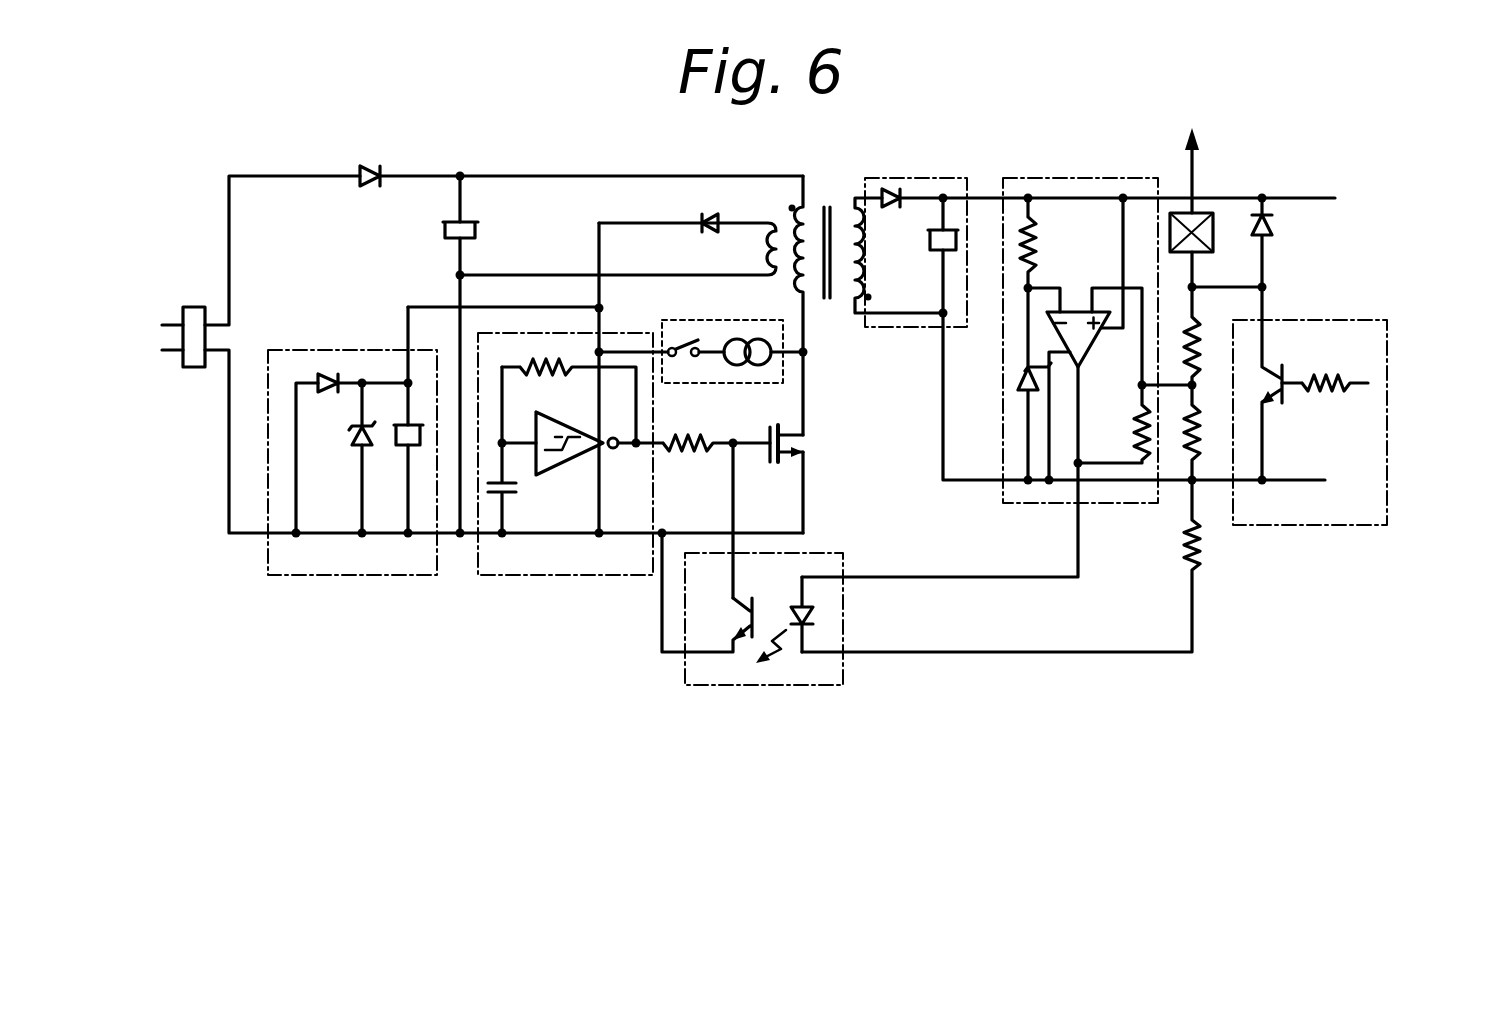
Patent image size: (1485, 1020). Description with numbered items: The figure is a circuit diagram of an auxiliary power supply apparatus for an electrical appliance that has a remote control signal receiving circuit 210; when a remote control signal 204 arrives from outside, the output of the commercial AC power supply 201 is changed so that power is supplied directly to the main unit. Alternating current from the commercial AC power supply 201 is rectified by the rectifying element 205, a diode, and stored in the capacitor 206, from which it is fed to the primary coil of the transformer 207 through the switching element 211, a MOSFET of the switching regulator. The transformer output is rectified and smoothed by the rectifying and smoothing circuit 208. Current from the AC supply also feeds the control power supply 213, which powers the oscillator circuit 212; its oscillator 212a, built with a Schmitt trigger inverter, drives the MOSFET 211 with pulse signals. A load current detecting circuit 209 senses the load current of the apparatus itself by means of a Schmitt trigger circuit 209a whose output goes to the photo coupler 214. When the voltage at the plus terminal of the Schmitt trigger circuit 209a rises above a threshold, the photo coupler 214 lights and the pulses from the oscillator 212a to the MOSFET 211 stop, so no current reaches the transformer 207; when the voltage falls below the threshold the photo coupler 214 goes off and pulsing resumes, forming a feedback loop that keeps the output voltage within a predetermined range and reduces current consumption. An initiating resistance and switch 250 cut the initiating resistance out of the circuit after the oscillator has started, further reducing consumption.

The commercial AC power supply 201 is at (195, 306).
The remote control signal 204 is at (1398, 398).
The rectifying element 205 is at (369, 167).
The capacitor 206 is at (479, 224).
The transformer 207 is at (797, 241).
The rectifying and smoothing circuit 208 is at (905, 328).
The load current detecting circuit 209 is at (997, 380).
The Schmitt trigger circuit 209a is at (1076, 308).
The remote control signal receiving circuit 210 is at (1300, 320).
The switching element 211 is at (770, 464).
The oscillator circuit 212 is at (624, 440).
The oscillator 212a is at (560, 475).
The control power supply 213 is at (350, 576).
The photo coupler 214 is at (1205, 213).
The initiating resistance cut off means 250 is at (693, 384).